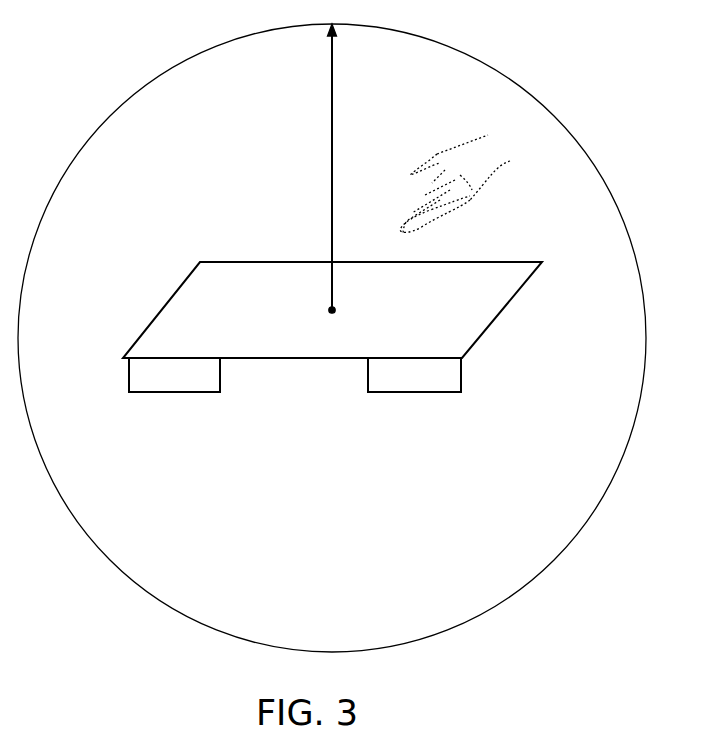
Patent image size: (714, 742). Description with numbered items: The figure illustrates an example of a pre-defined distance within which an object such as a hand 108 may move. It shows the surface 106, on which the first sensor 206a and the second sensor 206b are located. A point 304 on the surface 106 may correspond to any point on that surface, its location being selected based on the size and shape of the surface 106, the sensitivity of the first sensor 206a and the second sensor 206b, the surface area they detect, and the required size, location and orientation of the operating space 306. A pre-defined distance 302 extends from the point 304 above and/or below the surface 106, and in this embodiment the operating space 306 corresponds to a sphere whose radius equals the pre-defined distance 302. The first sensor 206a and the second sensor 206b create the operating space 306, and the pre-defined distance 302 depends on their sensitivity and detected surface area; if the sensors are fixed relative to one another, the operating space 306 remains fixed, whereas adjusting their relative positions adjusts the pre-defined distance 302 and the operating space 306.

The operating space 306 is at (588, 155).
The pre-defined distance 302 is at (332, 210).
The point 304 is at (332, 310).
The hand of user 108 is at (437, 150).
The surface 106 is at (352, 359).
The first sensor 206a is at (174, 375).
The second sensor 206b is at (414, 375).